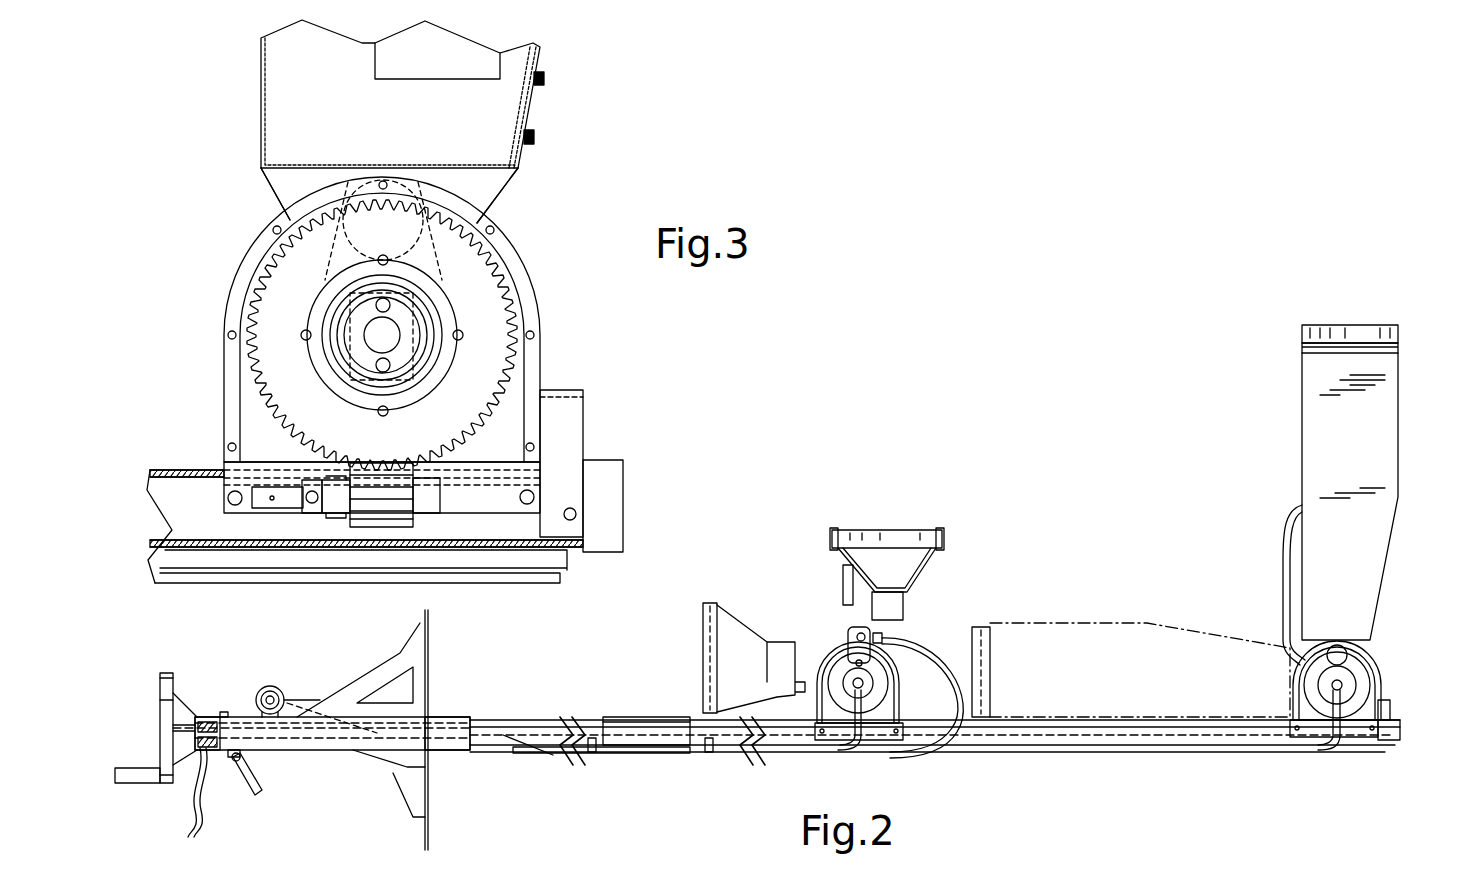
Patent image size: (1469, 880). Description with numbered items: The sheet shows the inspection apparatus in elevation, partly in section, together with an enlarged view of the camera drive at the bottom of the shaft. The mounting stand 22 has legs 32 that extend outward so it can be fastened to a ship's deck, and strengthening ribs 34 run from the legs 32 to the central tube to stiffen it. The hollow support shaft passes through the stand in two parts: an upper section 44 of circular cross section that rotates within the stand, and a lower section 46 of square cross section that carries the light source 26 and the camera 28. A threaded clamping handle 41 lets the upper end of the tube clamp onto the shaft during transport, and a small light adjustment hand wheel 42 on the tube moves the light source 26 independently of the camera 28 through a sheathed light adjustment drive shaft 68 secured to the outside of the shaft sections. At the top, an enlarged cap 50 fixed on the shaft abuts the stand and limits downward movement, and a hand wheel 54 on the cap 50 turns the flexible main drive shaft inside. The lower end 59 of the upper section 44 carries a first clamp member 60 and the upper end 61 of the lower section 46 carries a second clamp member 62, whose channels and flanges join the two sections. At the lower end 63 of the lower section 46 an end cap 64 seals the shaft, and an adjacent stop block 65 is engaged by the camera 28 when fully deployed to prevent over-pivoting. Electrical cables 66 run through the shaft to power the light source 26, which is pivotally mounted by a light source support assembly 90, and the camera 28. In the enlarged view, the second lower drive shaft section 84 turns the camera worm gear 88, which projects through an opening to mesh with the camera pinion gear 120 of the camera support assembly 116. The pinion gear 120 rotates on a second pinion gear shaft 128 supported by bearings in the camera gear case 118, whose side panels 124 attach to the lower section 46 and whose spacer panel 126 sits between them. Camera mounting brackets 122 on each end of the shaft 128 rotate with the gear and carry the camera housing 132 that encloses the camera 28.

In FIG. 2, the mounting stand 22 is at (786, 796).
In FIG. 2, the light source 26 is at (952, 518).
In FIG. 3, the camera 28 is at (556, 90).
In FIG. 2, the camera 28 is at (1380, 482).
In FIG. 2, the legs 32 is at (428, 828).
In FIG. 2, the strengthening ribs 34 is at (297, 745).
In FIG. 2, the threaded clamping handle 41 is at (242, 783).
In FIG. 2, the light adjustment hand wheel 42 is at (292, 676).
In FIG. 2, the upper section 44 is at (510, 718).
In FIG. 3, the lower section 46 is at (450, 550).
In FIG. 2, the lower section 46 is at (1127, 735).
In FIG. 2, the enlarged cap 50 is at (207, 716).
In FIG. 2, the hand wheel 54 is at (158, 708).
In FIG. 2, the lower end 59 is at (594, 720).
In FIG. 2, the first clamp member 60 is at (640, 718).
In FIG. 2, the upper end 61 is at (712, 745).
In FIG. 2, the second clamp member 62 is at (648, 757).
In FIG. 3, the lower end 63 is at (575, 553).
In FIG. 3, the end cap 64 is at (618, 493).
In FIG. 2, the end cap 64 is at (1402, 730).
In FIG. 3, the stop block 65 is at (577, 418).
In FIG. 2, the stop block 65 is at (1383, 700).
In FIG. 2, the electrical cables 66 is at (185, 815).
In FIG. 2, the sheathed light adjustment drive shaft 68 is at (928, 640).
In FIG. 3, the second lower drive shaft section 84 is at (373, 527).
In FIG. 3, the camera worm gear 88 is at (337, 530).
In FIG. 2, the light source support assembly 90 is at (818, 636).
In FIG. 3, the camera support assembly 116 is at (414, 319).
In FIG. 2, the camera support assembly 116 is at (1388, 650).
In FIG. 3, the camera gear case 118 is at (212, 320).
In FIG. 3, the camera pinion gear 120 is at (368, 325).
In FIG. 3, the camera mounting brackets 122 is at (473, 188).
In FIG. 3, the side panels 124 is at (258, 415).
In FIG. 3, the spacer panel 126 is at (538, 360).
In FIG. 3, the second pinion gear shaft 128 is at (372, 325).
In FIG. 3, the camera housing 132 is at (261, 120).
In FIG. 2, the camera housing 132 is at (1385, 568).